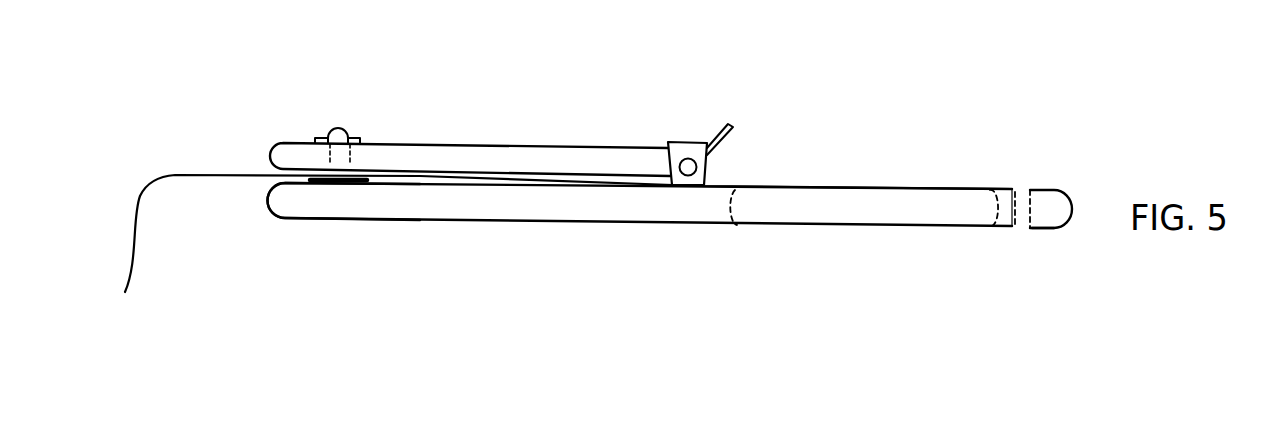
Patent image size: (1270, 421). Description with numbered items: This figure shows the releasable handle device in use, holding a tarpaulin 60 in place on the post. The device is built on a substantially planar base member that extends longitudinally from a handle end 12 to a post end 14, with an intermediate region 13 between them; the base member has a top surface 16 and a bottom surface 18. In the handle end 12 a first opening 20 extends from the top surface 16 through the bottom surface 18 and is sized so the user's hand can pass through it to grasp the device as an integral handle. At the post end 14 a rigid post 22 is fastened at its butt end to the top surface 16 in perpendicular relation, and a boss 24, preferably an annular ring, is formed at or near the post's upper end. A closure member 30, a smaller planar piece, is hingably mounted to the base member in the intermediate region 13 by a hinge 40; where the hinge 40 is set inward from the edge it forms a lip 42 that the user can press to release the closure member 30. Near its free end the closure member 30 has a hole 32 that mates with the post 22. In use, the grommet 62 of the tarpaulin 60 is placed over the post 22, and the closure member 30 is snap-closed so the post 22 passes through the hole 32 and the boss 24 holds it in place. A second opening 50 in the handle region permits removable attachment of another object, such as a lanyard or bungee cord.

The handle end 12 is at (1019, 252).
The intermediate region 13 is at (667, 246).
The post end 14 is at (303, 238).
The top surface 16 is at (1047, 187).
The bottom surface 18 is at (1042, 229).
The first opening 20 is at (990, 202).
The post 22 is at (336, 126).
The boss 24 is at (316, 138).
The closure member 30 is at (492, 160).
The hole 32 is at (337, 161).
The hinge 40 is at (686, 158).
The lip 42 is at (718, 128).
The second opening 50 is at (1018, 208).
The tarpaulin 60 is at (150, 176).
The grommet 62 is at (362, 183).